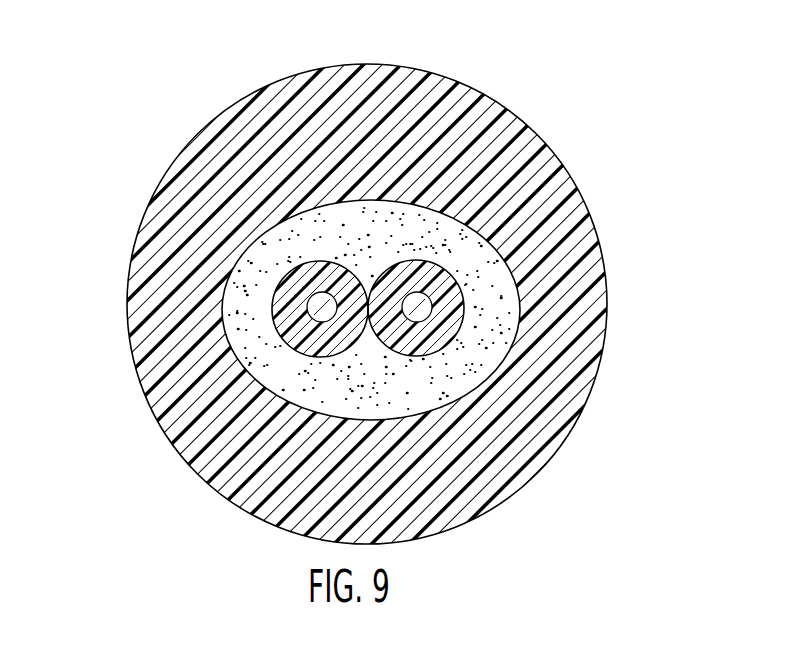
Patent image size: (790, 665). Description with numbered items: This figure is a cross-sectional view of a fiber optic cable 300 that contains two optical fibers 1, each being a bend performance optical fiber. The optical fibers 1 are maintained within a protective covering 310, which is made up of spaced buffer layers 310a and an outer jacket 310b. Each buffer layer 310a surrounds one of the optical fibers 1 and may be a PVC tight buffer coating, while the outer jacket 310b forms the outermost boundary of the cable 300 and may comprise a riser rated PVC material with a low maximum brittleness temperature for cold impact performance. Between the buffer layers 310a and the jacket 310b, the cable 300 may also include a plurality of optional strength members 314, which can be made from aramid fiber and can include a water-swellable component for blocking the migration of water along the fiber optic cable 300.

The fiber optic cable 300 is at (458, 58).
The protective covering 310 is at (370, 323).
The buffer layers 310a is at (283, 292).
The outer jacket 310b is at (167, 273).
The strength members 314 is at (472, 352).
The optical fibers 1 is at (400, 345).